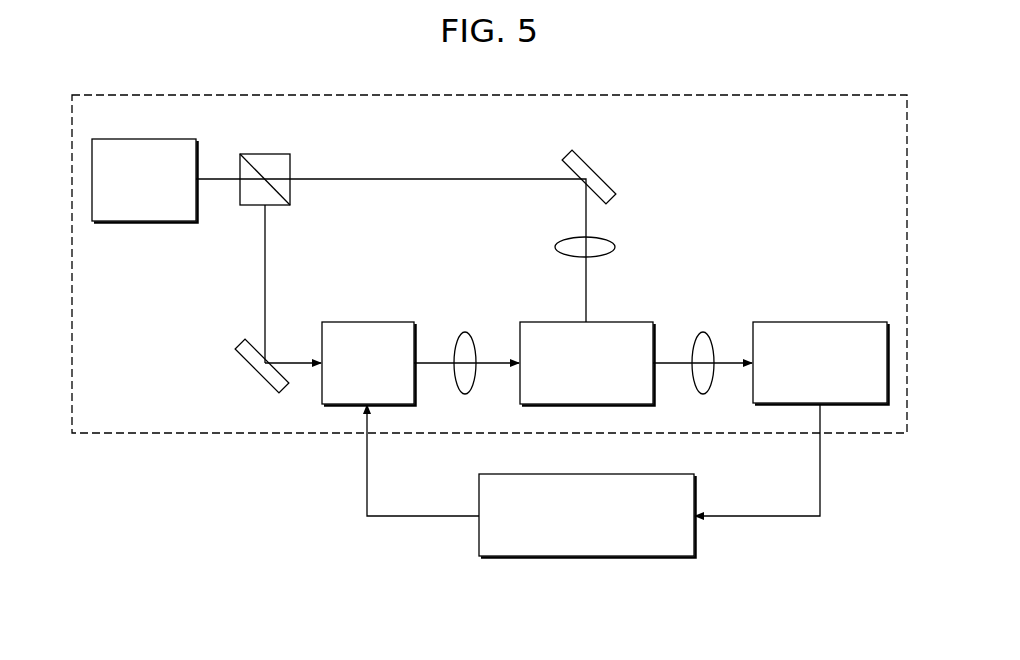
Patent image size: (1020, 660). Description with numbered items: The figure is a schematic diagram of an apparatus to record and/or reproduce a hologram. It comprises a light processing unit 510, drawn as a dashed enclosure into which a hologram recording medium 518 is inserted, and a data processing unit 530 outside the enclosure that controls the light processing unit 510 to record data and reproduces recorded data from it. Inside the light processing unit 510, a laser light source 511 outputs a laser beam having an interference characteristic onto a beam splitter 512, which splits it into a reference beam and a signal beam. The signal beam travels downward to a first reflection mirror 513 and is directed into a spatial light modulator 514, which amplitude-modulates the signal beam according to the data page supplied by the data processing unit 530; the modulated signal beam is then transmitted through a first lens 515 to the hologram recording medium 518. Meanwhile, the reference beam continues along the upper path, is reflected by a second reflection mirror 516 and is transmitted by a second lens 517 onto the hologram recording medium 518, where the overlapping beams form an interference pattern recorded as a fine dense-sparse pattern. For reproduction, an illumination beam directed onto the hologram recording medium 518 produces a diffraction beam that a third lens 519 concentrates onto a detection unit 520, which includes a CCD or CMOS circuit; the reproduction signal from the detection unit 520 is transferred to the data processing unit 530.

The light processing unit 510 is at (162, 434).
The laser light source 511 is at (145, 139).
The beam splitter 512 is at (267, 154).
The first reflection mirror 513 is at (253, 377).
The spatial light modulator 514 is at (367, 322).
The first lens 515 is at (465, 332).
The second reflection mirror 516 is at (598, 168).
The second lens 517 is at (616, 247).
The hologram recording medium 518 is at (608, 322).
The third lens 519 is at (703, 332).
The detection unit 520 is at (820, 322).
The data processing unit 530 is at (588, 474).